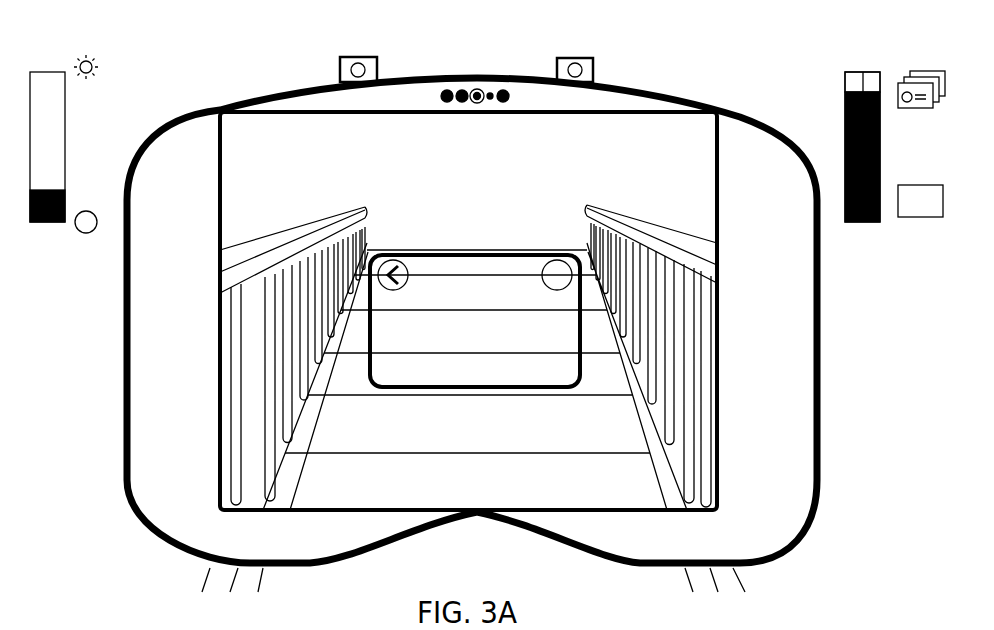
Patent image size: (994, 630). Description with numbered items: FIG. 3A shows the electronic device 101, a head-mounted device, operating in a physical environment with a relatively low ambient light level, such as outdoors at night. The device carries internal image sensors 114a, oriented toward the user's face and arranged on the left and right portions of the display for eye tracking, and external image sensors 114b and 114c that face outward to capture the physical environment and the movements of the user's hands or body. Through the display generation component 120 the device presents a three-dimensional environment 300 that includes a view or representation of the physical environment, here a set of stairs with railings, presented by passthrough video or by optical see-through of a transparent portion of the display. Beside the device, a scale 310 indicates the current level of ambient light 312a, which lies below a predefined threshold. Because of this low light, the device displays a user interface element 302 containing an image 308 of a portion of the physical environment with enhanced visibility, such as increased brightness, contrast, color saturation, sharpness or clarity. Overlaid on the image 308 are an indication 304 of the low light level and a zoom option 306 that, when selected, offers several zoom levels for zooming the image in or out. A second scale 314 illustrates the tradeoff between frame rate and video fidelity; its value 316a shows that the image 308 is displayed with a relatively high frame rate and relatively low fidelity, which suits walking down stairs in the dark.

The electronic device 101 is at (680, 98).
The internal image sensors 114a is at (528, 82).
The external image sensor 114b is at (378, 66).
The external image sensor 114c is at (594, 70).
The display generation component 120 is at (708, 514).
The three-dimensional environment 300 is at (496, 156).
The user interface element 302 is at (470, 255).
The indication of low light level 304 is at (392, 260).
The zoom option 306 is at (557, 260).
The image 308 is at (492, 303).
The scale 310 is at (75, 174).
The level of ambient light 312a is at (50, 190).
The scale 314 is at (895, 147).
The value 316a is at (862, 88).